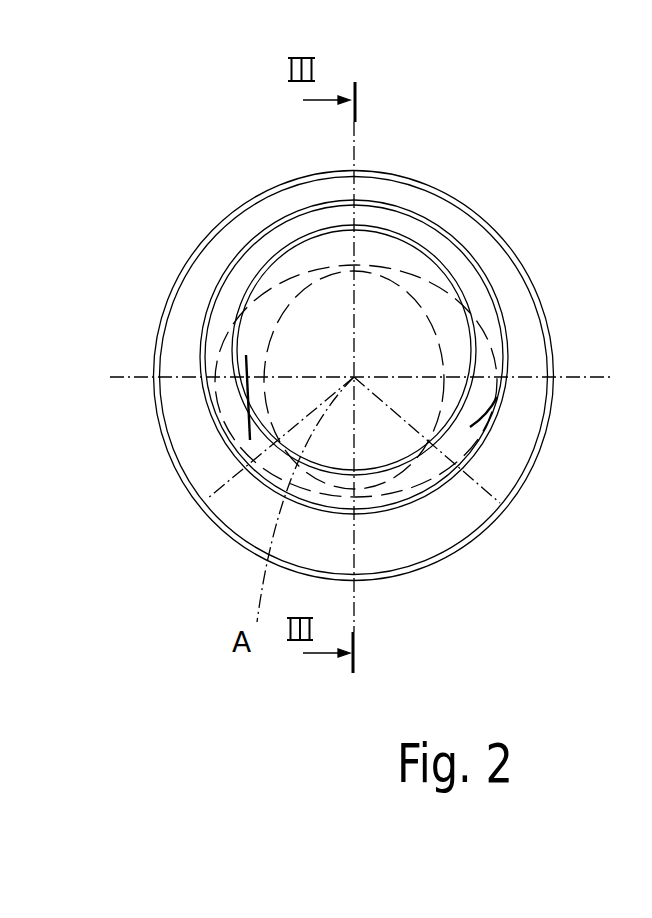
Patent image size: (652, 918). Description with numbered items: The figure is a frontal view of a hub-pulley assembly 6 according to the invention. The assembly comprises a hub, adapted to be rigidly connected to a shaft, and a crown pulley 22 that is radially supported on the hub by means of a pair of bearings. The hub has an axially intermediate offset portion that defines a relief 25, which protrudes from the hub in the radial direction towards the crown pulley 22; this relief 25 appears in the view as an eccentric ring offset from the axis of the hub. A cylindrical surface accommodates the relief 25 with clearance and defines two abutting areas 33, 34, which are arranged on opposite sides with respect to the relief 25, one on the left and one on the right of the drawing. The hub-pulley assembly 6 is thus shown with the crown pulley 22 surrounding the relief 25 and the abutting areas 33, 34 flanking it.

The hub-pulley assembly 6 is at (242, 176).
The crown pulley 22 is at (426, 178).
The relief 25 is at (380, 250).
The abutting area 33 is at (250, 448).
The abutting area 34 is at (461, 452).